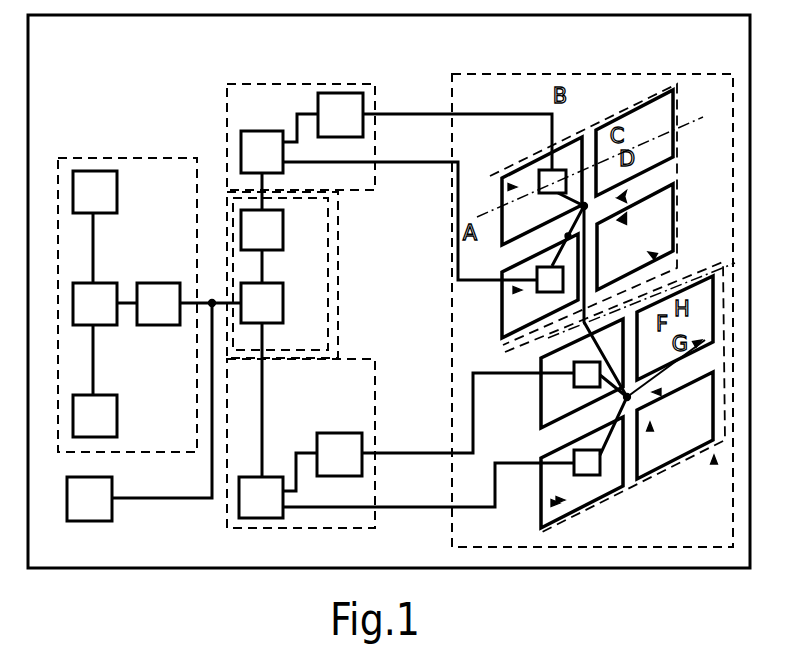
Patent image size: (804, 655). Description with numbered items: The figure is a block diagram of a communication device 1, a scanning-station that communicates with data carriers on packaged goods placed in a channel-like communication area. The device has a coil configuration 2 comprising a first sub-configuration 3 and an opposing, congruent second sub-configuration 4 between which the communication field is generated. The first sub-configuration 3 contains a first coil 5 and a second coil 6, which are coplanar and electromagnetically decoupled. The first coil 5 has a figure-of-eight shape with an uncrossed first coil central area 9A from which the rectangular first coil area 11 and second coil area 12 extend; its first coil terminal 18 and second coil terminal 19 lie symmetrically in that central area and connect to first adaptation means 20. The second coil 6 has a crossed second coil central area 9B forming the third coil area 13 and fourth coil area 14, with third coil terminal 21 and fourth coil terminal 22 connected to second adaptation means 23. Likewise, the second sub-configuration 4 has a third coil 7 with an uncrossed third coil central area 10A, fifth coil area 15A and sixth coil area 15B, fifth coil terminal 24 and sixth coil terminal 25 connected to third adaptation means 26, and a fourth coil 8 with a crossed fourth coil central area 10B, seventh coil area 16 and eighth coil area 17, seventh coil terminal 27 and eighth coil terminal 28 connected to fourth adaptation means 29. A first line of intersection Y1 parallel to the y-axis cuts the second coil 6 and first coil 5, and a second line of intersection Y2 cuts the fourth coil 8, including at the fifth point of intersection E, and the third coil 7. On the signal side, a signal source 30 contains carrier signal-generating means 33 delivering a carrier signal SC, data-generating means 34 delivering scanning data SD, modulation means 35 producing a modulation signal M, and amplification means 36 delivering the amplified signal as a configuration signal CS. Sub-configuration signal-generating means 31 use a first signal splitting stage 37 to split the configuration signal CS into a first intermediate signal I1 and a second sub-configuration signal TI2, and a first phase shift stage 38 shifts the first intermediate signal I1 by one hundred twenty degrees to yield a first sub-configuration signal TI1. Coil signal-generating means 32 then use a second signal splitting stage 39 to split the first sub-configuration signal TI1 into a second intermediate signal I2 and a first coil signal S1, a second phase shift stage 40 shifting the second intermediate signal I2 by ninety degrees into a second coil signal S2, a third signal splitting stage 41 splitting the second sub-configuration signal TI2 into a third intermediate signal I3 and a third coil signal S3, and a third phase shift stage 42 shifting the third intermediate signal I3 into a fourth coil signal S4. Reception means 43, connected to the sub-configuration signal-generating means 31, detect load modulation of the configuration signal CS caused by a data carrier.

The communication device 1 is at (265, 570).
The coil configuration 2 is at (452, 375).
The first sub-configuration 3 is at (632, 103).
The second sub-configuration 4 is at (716, 445).
The first coil 5 is at (680, 122).
The second coil 6 is at (676, 207).
The third coil 7 is at (556, 500).
The fourth coil 8 is at (538, 357).
The first coil central area 9A is at (625, 193).
The second coil central area 9B is at (625, 215).
The third coil central area 10A is at (661, 392).
The fourth coil central area 10B is at (651, 431).
The first coil area 11 is at (676, 90).
The second coil area 12 is at (513, 290).
The third coil area 13 is at (508, 187).
The fourth coil area 14 is at (655, 256).
The fifth coil area 15A is at (713, 464).
The sixth coil area 15B is at (551, 503).
The seventh coil area 16 is at (574, 387).
The eighth coil area 17 is at (690, 440).
The first coil terminal 18 is at (572, 236).
The second coil terminal 19 is at (520, 246).
The first adaptation means 20 is at (550, 290).
The third coil terminal 21 is at (584, 198).
The fourth coil terminal 22 is at (552, 195).
The second adaptation means 23 is at (545, 170).
The fifth coil terminal 24 is at (595, 400).
The sixth coil terminal 25 is at (622, 480).
The third adaptation means 26 is at (587, 478).
The seventh coil terminal 27 is at (500, 337).
The eighth coil terminal 28 is at (604, 390).
The fourth adaptation means 29 is at (574, 372).
The signal source 30 is at (135, 158).
The sub-configuration signal-generating means 31 is at (228, 198).
The coil signal-generating means 32 is at (228, 118).
The carrier signal-generating means 33 is at (98, 202).
The data-generating means 34 is at (105, 420).
The modulation means 35 is at (100, 295).
The amplification means 36 is at (158, 300).
The first signal splitting stage 37 is at (268, 310).
The first phase shift stage 38 is at (270, 240).
The second signal splitting stage 39 is at (265, 140).
The second phase shift stage 40 is at (343, 112).
The third signal splitting stage 41 is at (270, 485).
The third phase shift stage 42 is at (335, 440).
The reception means 43 is at (100, 498).
The first coil signal S1 is at (420, 165).
The second coil signal S2 is at (425, 113).
The third coil signal S3 is at (420, 510).
The fourth coil signal S4 is at (425, 450).
The first intermediate signal I1 is at (265, 270).
The second intermediate signal I2 is at (297, 125).
The third intermediate signal I3 is at (298, 487).
The first sub-configuration signal TI1 is at (272, 183).
The second sub-configuration signal TI2 is at (263, 400).
The carrier signal SC is at (95, 243).
The scanning data SD is at (95, 385).
The modulation signal M is at (124, 305).
The configuration signal CS is at (190, 305).
The first line of intersection Y1 is at (700, 117).
The second line of intersection Y2 is at (728, 292).
The fifth point of intersection E is at (563, 395).